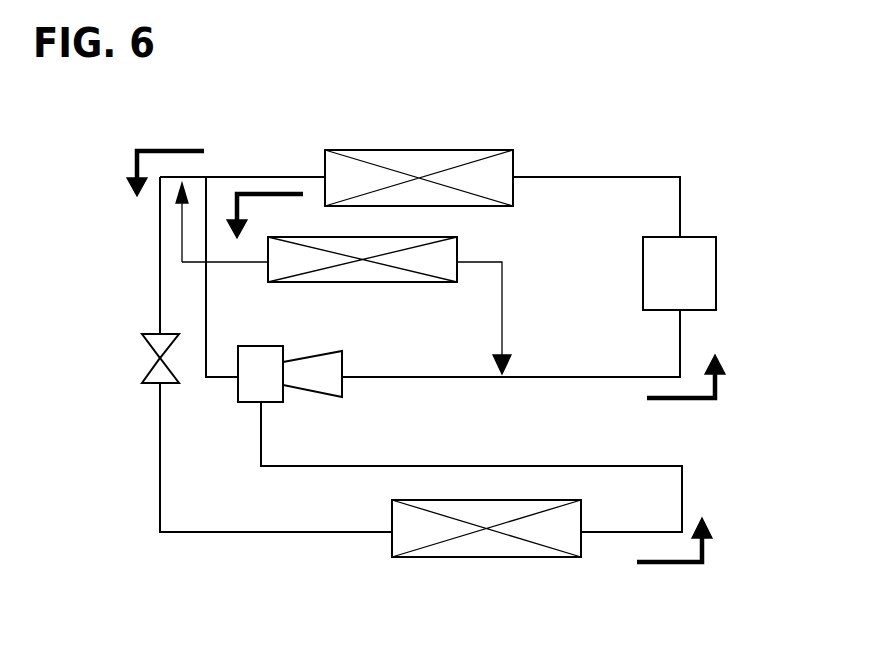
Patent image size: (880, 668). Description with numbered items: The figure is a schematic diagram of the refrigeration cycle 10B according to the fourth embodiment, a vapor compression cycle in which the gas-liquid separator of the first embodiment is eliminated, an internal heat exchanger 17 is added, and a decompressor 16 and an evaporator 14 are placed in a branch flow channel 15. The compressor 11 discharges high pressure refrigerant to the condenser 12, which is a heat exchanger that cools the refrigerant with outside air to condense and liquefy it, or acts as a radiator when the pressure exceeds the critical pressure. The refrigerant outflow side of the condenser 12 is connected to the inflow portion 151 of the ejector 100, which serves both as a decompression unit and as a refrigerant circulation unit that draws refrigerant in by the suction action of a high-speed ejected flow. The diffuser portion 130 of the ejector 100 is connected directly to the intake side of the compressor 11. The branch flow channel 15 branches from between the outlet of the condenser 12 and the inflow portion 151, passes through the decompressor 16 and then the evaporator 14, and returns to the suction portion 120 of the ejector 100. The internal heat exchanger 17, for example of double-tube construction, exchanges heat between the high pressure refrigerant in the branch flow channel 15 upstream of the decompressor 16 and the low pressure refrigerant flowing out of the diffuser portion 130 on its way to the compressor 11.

The refrigeration cycle 10B is at (241, 160).
The compressor 11 is at (700, 236).
The condenser 12 is at (470, 149).
The evaporator 14 is at (538, 557).
The branch flow channel 15 is at (158, 252).
The decompressor 16 is at (150, 350).
The internal heat exchanger 17 is at (410, 282).
The ejector 100 is at (286, 374).
The suction portion 120 is at (262, 402).
The diffuser portion 130 is at (325, 397).
The inflow portion 151 is at (237, 380).